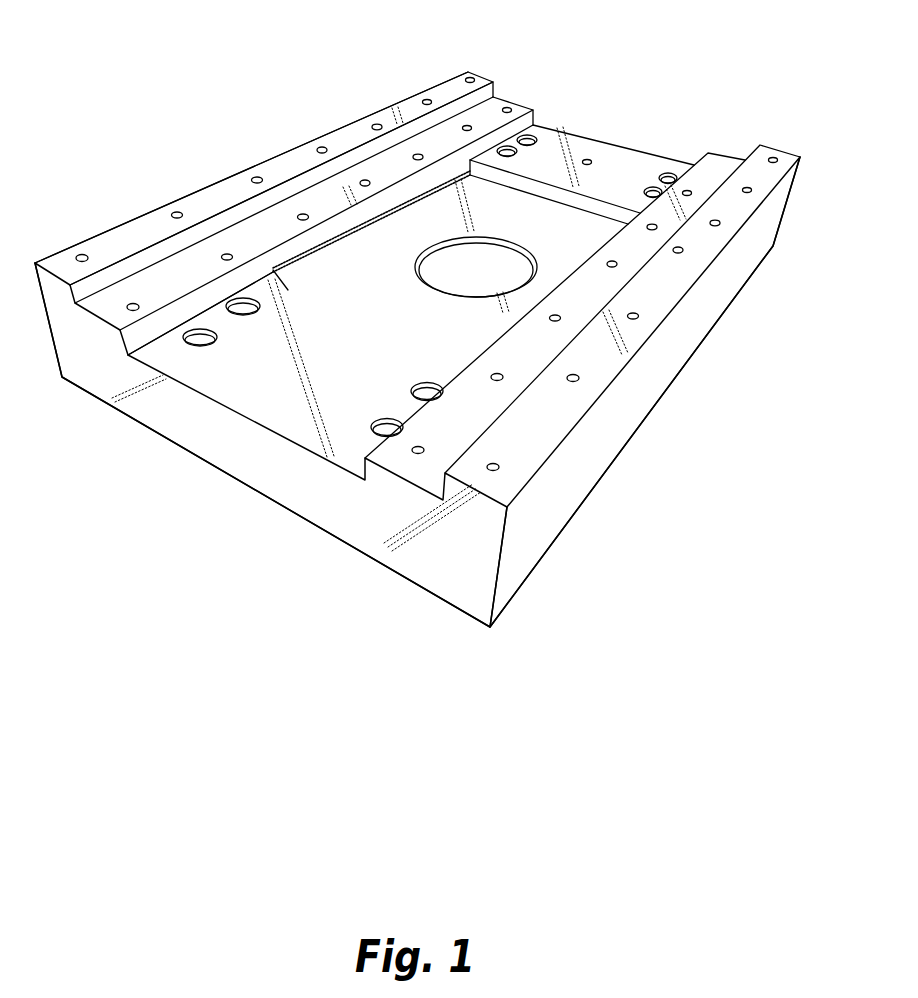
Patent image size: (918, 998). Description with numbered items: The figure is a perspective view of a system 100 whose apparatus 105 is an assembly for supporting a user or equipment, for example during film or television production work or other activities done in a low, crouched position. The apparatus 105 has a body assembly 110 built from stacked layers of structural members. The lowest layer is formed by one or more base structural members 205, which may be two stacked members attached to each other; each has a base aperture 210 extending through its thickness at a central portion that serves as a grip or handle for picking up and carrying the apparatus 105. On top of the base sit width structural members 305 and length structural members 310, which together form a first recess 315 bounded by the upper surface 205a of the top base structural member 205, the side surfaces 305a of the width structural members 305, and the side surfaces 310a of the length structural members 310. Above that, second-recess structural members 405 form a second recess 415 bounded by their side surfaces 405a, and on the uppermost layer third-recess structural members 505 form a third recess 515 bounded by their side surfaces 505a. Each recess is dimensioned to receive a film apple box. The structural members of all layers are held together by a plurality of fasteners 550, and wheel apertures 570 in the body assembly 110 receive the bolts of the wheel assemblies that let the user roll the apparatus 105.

The system 100 is at (287, 92).
The apparatus 105 is at (203, 187).
The body assembly 110 is at (137, 232).
The base structural member 205 is at (335, 468).
The upper surface of base structural member 205a is at (583, 230).
The base aperture 210 is at (473, 262).
The width structural member 305 is at (235, 378).
The side surface of width structural member 305a is at (531, 190).
The length structural member 310 is at (327, 253).
The side surface of length structural member 310a is at (362, 231).
The first recess 315 is at (497, 178).
The second-recess structural member 405 is at (497, 112).
The side surface of second-recess structural member 405a is at (496, 200).
The second recess 415 is at (168, 364).
The third-recess structural member 505 is at (346, 130).
The side surface of third-recess structural member 505a is at (425, 115).
The third recess 515 is at (106, 310).
The fastener 550 is at (257, 178).
The wheel aperture 570 is at (264, 307).